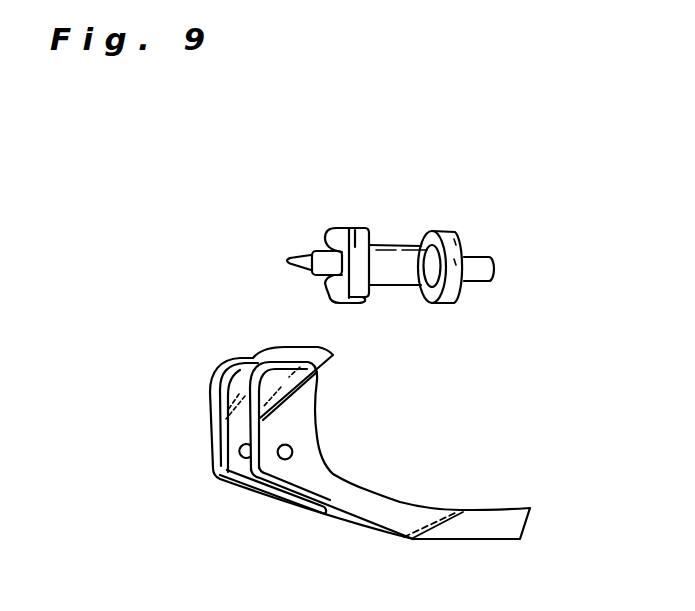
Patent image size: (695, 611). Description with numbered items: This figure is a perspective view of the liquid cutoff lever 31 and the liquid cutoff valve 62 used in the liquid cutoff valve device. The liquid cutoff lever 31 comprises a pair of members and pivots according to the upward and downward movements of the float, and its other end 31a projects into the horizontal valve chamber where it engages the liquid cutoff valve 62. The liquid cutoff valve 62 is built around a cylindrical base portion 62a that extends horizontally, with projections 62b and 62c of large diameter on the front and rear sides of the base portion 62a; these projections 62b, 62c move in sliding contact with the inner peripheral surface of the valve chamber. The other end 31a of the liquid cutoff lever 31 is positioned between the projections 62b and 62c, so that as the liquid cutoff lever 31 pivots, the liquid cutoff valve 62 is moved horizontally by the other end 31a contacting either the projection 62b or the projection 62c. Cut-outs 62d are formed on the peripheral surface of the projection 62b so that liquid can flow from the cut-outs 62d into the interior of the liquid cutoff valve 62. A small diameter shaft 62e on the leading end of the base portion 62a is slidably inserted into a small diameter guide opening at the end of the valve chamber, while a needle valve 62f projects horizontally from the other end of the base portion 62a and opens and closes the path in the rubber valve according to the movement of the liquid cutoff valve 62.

The liquid cutoff valve 62 is at (302, 218).
The cylindrical base portion 62a is at (404, 268).
The projection 62b is at (378, 247).
The projection 62c is at (457, 231).
The cut-outs 62d is at (357, 228).
The small diameter shaft 62e is at (487, 280).
The needle valve 62f is at (309, 266).
The liquid cutoff lever 31 is at (380, 459).
The other end of the liquid cutoff lever 31a is at (326, 360).